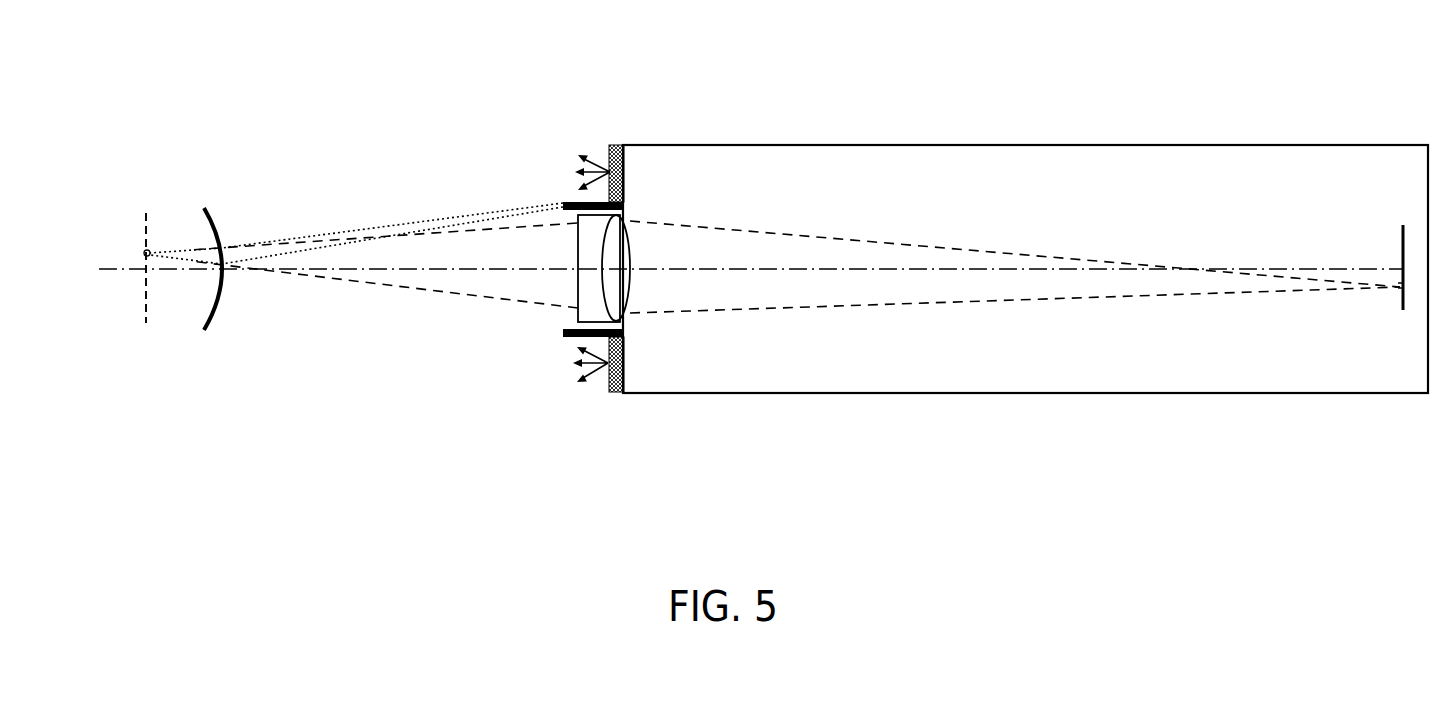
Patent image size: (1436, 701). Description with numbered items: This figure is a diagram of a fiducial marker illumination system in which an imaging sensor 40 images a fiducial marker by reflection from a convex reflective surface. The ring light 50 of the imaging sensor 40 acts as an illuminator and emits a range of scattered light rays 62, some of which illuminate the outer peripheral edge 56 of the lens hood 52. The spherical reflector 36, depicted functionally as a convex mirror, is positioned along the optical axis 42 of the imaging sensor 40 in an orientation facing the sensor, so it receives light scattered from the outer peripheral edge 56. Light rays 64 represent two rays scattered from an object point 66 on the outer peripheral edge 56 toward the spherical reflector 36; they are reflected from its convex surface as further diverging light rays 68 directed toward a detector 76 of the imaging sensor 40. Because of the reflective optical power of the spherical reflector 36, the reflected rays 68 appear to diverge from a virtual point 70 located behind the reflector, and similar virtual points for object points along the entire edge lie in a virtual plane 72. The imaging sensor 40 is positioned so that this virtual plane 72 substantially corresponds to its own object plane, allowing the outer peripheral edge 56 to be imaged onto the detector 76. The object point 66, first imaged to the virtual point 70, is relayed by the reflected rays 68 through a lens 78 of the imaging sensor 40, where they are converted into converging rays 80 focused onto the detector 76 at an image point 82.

The spherical reflector 36 is at (217, 307).
The imaging sensor 40 is at (1010, 133).
The optical axis 42 is at (1281, 268).
The ring light 50 is at (611, 395).
The lens hood 52 is at (565, 338).
The outer peripheral edge 56 is at (563, 333).
The scattered light rays 62 is at (596, 150).
The light rays 64 is at (442, 209).
The object point 66 is at (563, 202).
The reflected light rays 68 is at (483, 231).
The virtual point 70 is at (145, 253).
The virtual plane 72 is at (152, 307).
The detector 76 is at (1400, 247).
The lens 78 is at (630, 291).
The converging rays 80 is at (807, 237).
The image point 82 is at (1400, 286).